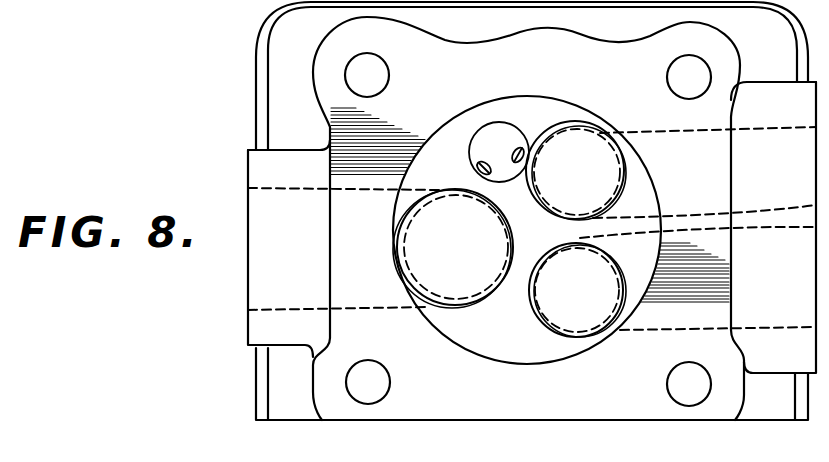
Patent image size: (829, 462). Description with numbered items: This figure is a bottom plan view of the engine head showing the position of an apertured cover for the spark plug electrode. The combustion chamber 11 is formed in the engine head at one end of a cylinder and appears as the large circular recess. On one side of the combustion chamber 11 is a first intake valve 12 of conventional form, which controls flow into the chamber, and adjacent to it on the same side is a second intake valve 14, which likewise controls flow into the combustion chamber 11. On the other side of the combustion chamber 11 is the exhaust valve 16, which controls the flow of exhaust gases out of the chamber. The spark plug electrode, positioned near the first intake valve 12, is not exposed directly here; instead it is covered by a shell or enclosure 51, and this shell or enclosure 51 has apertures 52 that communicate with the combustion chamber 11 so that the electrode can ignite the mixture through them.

The combustion chamber 11 is at (538, 112).
The first intake valve 12 is at (593, 203).
The second intake valve 14 is at (590, 306).
The exhaust valve 16 is at (470, 283).
The shell or enclosure 51 is at (487, 135).
The apertures 52 is at (526, 157).